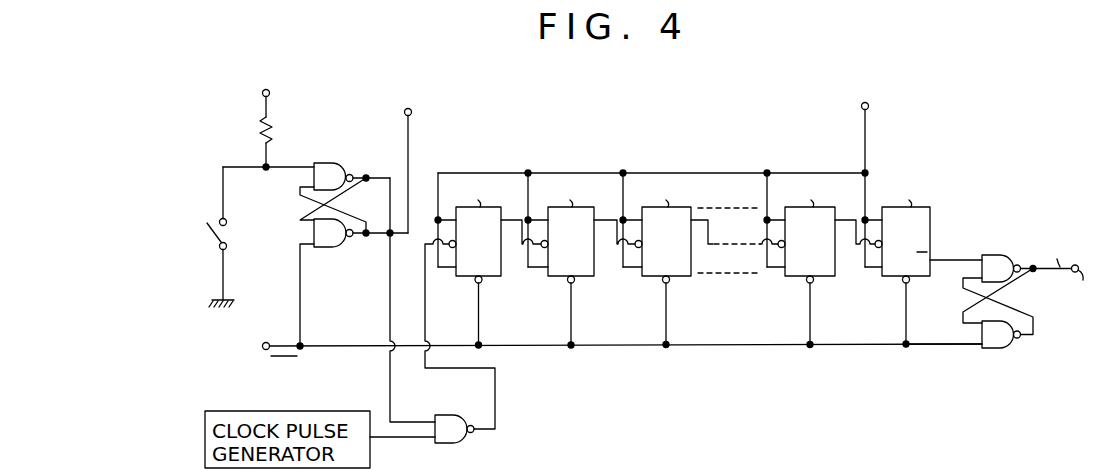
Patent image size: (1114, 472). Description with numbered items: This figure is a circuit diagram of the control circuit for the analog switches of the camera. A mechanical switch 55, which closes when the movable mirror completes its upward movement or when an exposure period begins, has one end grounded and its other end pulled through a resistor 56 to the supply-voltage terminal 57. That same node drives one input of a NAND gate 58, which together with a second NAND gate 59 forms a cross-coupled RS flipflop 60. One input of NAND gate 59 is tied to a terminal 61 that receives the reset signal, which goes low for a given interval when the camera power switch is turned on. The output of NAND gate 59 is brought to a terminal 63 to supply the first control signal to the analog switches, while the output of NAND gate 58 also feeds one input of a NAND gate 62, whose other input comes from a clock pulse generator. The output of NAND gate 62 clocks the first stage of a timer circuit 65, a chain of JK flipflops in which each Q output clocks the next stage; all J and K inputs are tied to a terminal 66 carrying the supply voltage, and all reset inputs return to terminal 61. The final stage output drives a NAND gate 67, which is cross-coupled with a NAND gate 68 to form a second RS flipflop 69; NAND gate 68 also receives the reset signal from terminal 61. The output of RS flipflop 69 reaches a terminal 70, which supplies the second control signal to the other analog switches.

The switch 55 is at (213, 231).
The resistor 56 is at (272, 130).
The power supply terminal Vcc 57 is at (263, 92).
The NAND gate 58 is at (341, 165).
The NAND gate 59 is at (339, 250).
The RS flipflop 60 is at (369, 168).
The terminal 61 is at (265, 348).
The NAND gate 62 is at (449, 444).
The terminal 63 is at (409, 109).
The timer circuit 65 is at (658, 166).
The terminal 66 is at (862, 107).
The NAND gate 67 is at (1000, 259).
The NAND gate 68 is at (1001, 349).
The RS flipflop 69 is at (1040, 303).
The terminal 70 is at (1075, 272).